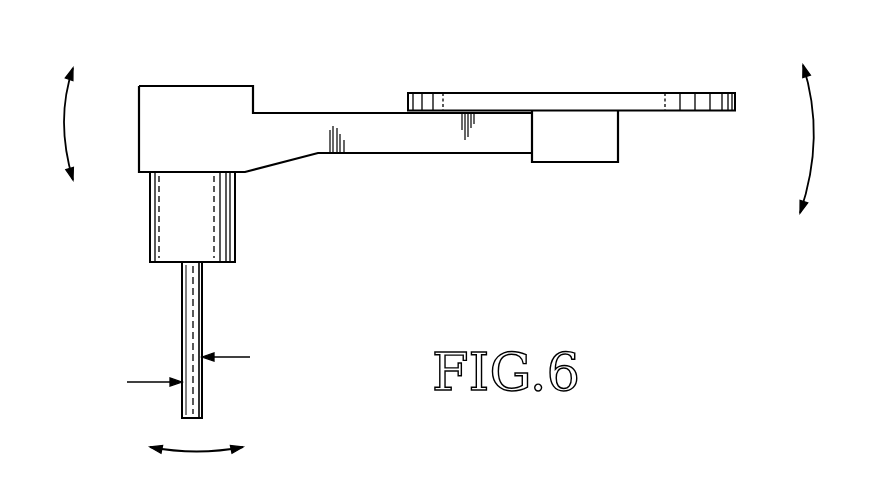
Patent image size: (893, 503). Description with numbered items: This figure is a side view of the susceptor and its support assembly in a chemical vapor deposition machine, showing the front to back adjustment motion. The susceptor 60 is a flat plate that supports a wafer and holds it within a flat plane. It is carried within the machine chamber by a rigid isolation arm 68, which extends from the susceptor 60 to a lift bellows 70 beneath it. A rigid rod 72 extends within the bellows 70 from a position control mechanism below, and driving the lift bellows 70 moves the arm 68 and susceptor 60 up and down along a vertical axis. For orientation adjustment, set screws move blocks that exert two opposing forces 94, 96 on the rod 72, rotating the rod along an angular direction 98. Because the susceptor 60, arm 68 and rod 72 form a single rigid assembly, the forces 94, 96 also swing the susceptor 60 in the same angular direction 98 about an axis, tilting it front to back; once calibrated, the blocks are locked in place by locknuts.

The susceptor 60 is at (673, 94).
The rigid isolation arm 68 is at (475, 155).
The lift bellows 70 is at (235, 222).
The rigid rod 72 is at (202, 312).
The force 94 is at (143, 382).
The force 96 is at (247, 357).
The angular direction 98 is at (66, 117).